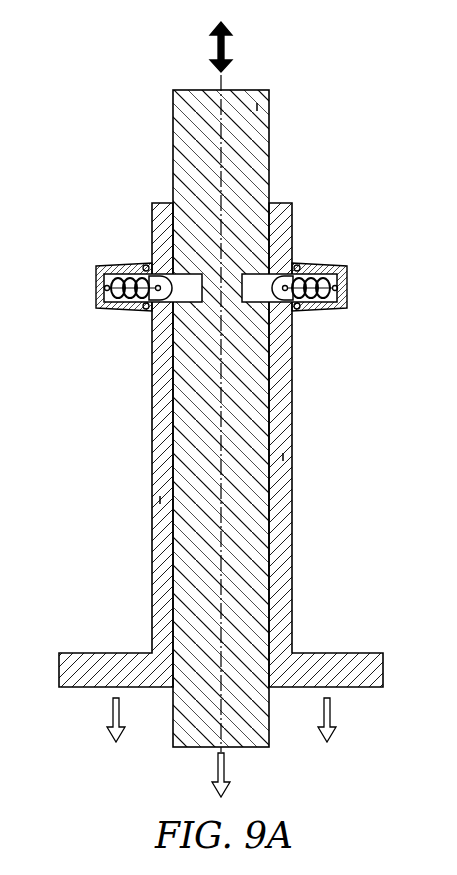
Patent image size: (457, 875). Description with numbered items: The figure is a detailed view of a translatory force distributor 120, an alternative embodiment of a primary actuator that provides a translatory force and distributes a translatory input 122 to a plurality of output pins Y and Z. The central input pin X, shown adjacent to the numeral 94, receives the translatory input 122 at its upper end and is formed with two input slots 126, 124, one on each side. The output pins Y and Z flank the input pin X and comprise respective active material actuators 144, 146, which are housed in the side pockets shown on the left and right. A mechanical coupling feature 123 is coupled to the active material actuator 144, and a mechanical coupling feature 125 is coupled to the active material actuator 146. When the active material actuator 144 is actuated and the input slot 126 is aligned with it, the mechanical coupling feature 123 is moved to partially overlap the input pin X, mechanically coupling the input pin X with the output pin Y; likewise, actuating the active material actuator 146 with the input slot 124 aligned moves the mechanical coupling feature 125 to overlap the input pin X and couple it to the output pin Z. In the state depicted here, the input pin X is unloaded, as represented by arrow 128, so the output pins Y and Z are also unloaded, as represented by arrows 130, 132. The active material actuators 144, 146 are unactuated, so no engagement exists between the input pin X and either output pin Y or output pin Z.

The shaft 94 is at (204, 418).
The translatory force distributor 120 is at (115, 105).
The translatory input 122 is at (229, 57).
The mechanical coupling feature 123 is at (164, 302).
The input slot 124 is at (287, 306).
The mechanical coupling feature 125 is at (284, 272).
The input slot 126 is at (174, 272).
The arrow 128 is at (227, 773).
The arrow 130 is at (113, 718).
The arrow 132 is at (329, 716).
The active material actuator 144 is at (98, 274).
The active material actuator 146 is at (347, 278).
The input pin X is at (257, 107).
The output pin Y is at (160, 500).
The output pin Z is at (283, 457).